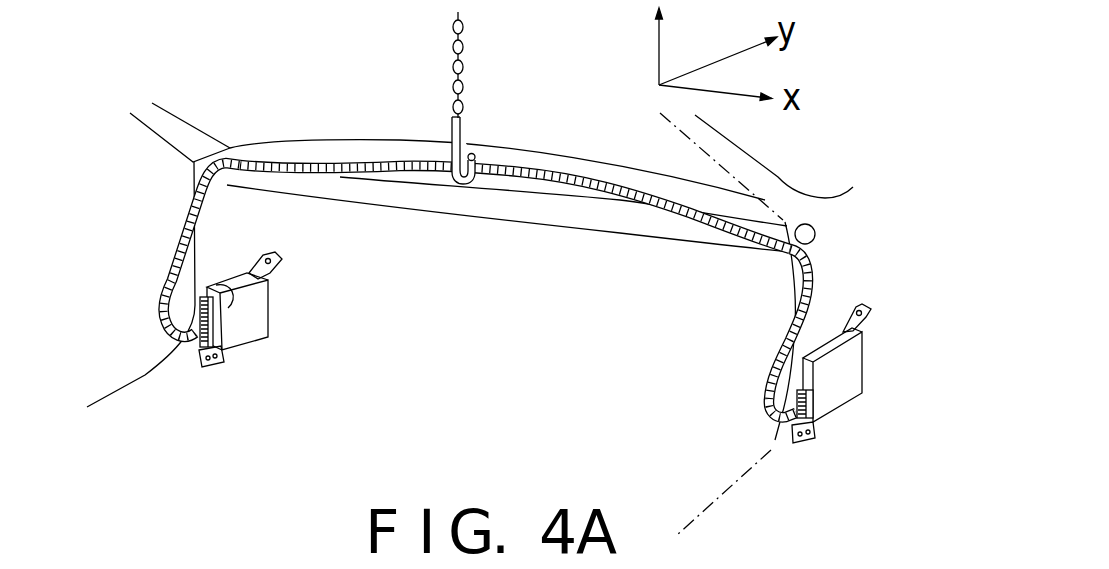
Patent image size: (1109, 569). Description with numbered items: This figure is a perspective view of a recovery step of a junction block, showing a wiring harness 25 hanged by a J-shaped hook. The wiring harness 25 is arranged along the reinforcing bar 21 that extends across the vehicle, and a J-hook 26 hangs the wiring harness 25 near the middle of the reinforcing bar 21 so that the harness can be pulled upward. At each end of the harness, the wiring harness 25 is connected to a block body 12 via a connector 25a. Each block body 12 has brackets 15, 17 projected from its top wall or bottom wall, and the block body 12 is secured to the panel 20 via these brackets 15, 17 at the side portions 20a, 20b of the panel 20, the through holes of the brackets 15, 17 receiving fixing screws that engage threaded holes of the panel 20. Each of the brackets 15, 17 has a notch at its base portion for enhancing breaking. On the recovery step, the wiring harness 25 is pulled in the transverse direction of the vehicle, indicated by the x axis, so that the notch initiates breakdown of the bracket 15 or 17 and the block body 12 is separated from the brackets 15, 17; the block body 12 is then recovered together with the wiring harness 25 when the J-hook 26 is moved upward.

The block body 12 is at (276, 348).
The bracket 15 is at (212, 375).
The bracket 17 is at (292, 257).
The panel 20 is at (137, 378).
The side portion of the panel 20a is at (197, 291).
The side portion of the panel 20b is at (773, 367).
The reinforcing bar 21 is at (335, 187).
The wiring harness 25 is at (514, 164).
The connector 25a is at (187, 277).
The J-hook 26 is at (455, 184).